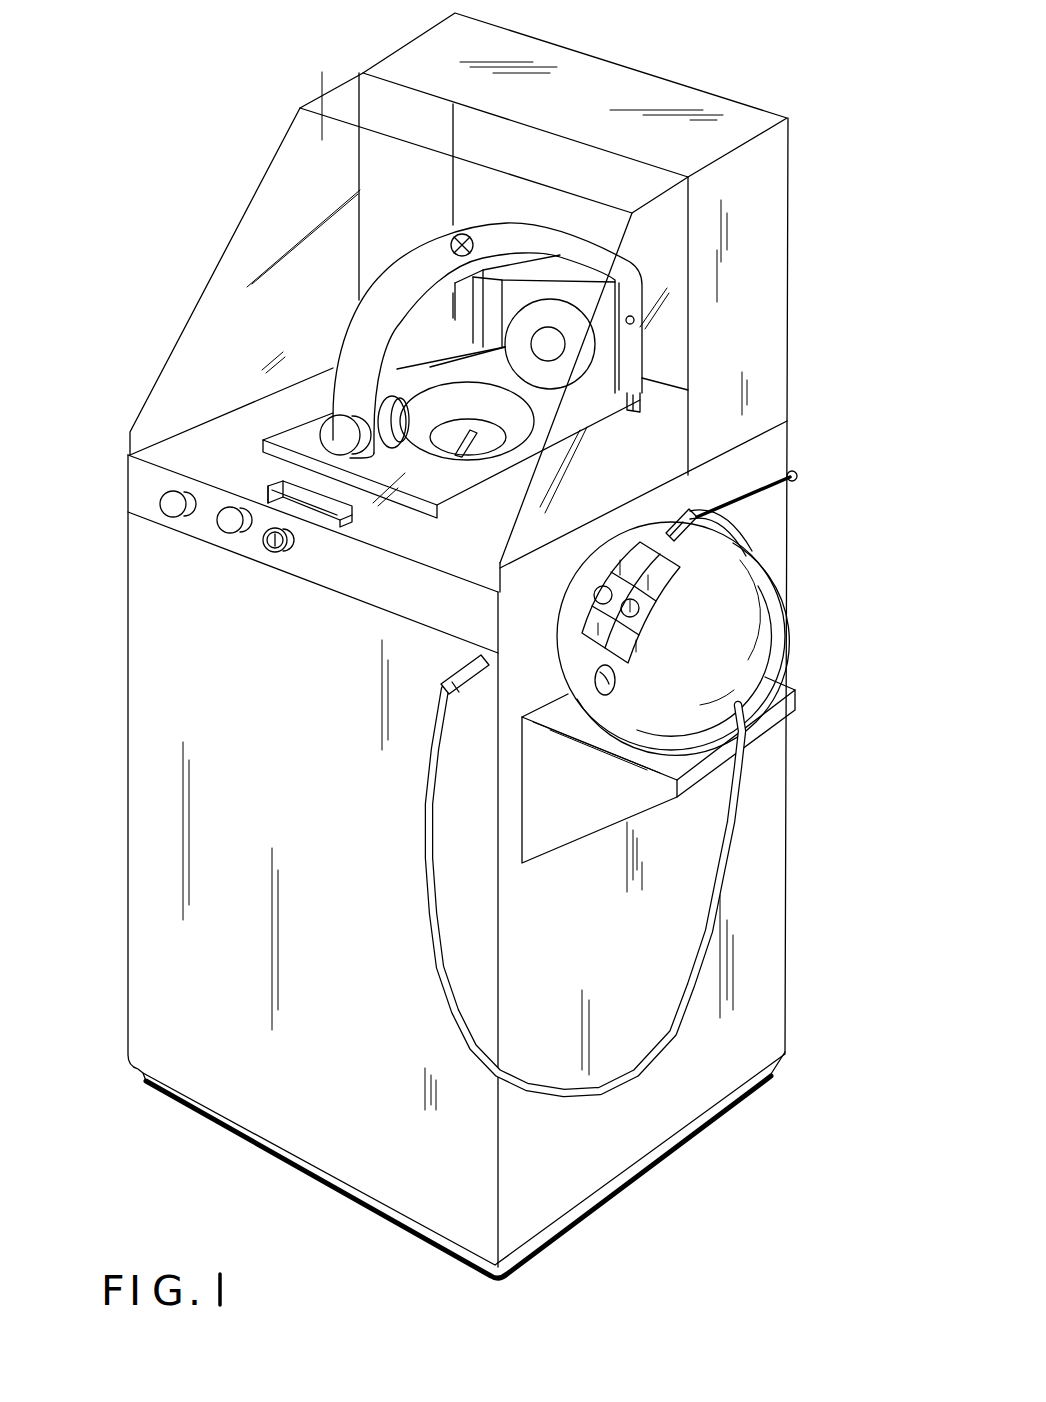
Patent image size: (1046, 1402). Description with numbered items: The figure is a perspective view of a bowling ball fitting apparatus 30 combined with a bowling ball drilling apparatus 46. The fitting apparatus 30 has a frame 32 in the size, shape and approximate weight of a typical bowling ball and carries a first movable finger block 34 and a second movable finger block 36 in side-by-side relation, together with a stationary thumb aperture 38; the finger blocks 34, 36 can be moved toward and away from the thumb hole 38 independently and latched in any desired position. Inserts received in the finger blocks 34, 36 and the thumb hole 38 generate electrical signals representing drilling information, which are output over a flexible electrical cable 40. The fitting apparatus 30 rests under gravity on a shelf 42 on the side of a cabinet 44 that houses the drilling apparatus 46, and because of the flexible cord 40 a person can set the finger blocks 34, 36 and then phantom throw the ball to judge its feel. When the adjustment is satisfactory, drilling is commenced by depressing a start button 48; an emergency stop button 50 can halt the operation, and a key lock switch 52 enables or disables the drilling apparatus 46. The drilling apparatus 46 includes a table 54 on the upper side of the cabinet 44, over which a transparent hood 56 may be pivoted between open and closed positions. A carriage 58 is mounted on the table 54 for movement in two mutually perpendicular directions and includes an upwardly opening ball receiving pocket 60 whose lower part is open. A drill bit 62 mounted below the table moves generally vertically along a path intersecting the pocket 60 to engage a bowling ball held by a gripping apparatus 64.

The fitting apparatus 30 is at (715, 502).
The frame 32 is at (773, 618).
The first movable finger block 34 is at (599, 575).
The second movable finger block 36 is at (640, 607).
The thumb aperture 38 is at (595, 680).
The flexible electrical cable 40 is at (747, 800).
The shelf 42 is at (598, 790).
The cabinet 44 is at (775, 540).
The drilling apparatus 46 is at (143, 483).
The start button 48 is at (177, 507).
The emergency stop button 50 is at (227, 522).
The key lock switch 52 is at (288, 542).
The table 54 is at (222, 435).
The transparent hood 56 is at (200, 300).
The carriage 58 is at (404, 508).
The ball receiving pocket 60 is at (440, 397).
The drill bit 62 is at (640, 414).
The gripping apparatus 64 is at (410, 263).